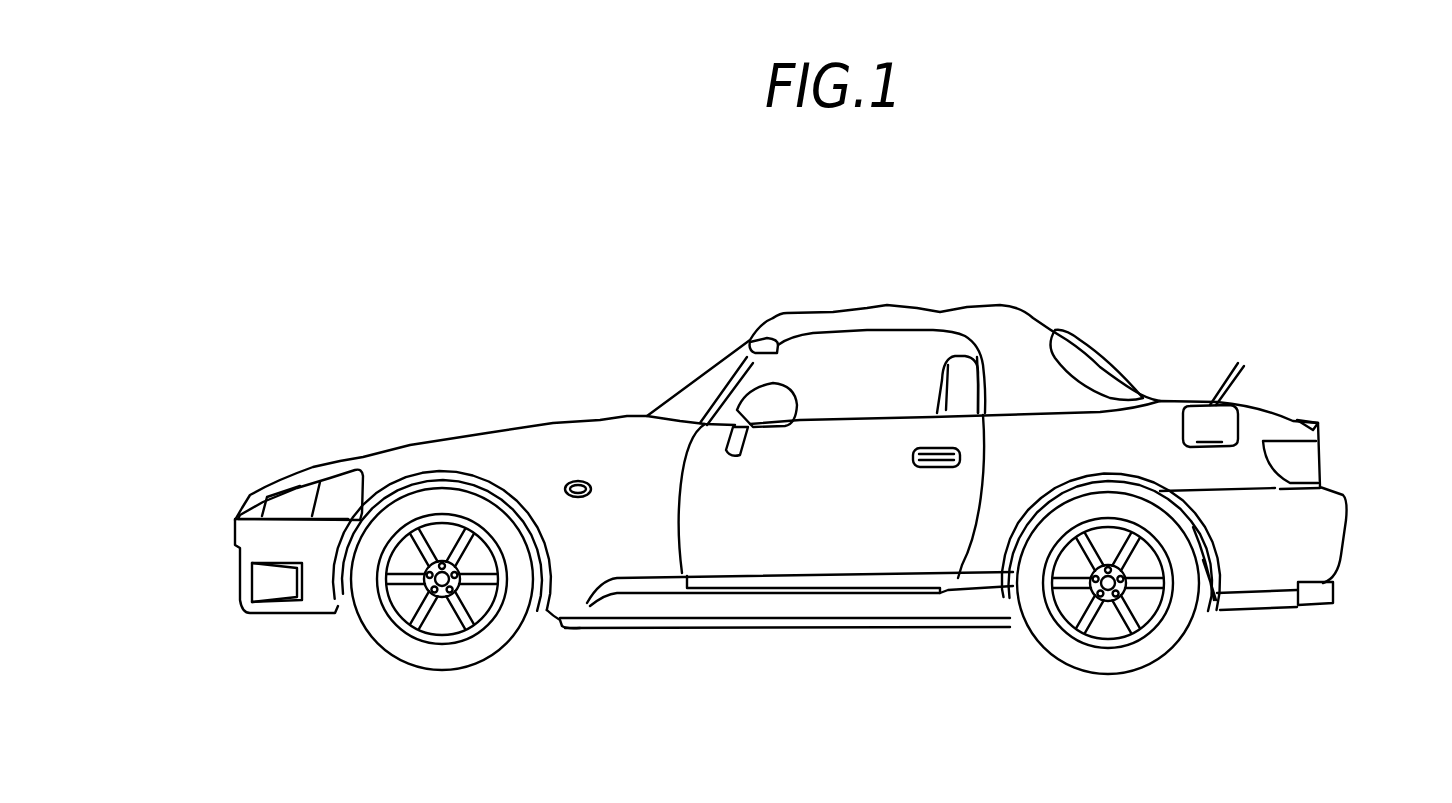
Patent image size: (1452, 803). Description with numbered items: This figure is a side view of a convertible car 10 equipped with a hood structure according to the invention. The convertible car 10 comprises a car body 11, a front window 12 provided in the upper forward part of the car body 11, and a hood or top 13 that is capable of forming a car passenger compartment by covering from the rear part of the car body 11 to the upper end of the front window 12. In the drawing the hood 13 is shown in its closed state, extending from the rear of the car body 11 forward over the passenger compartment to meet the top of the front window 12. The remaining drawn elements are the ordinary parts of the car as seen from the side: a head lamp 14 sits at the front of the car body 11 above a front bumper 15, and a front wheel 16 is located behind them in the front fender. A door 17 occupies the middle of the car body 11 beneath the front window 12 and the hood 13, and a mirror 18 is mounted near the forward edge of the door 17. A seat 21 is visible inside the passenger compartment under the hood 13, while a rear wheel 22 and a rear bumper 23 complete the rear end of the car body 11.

The convertible car 10 is at (456, 285).
The car body 11 is at (553, 421).
The front window 12 is at (717, 362).
The hood 13 is at (937, 310).
The head lamp 14 is at (320, 500).
The front bumper 15 is at (233, 540).
The front wheel 16 is at (372, 645).
The door 17 is at (788, 548).
The mirror 18 is at (795, 400).
The seat 21 is at (940, 372).
The rear wheel 22 is at (1185, 640).
The rear bumper 23 is at (1346, 535).